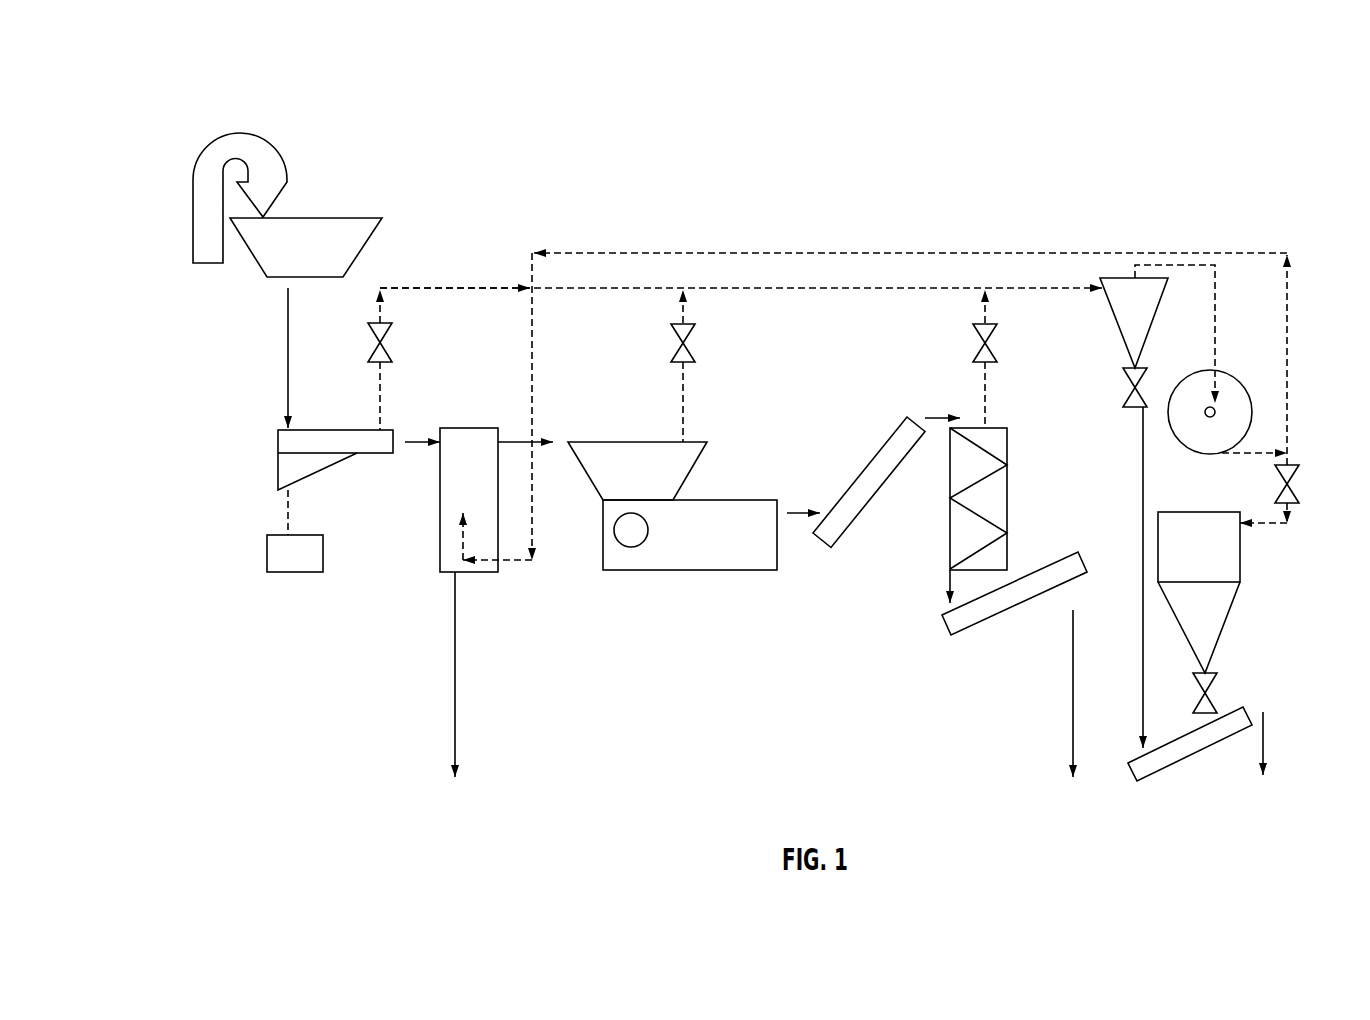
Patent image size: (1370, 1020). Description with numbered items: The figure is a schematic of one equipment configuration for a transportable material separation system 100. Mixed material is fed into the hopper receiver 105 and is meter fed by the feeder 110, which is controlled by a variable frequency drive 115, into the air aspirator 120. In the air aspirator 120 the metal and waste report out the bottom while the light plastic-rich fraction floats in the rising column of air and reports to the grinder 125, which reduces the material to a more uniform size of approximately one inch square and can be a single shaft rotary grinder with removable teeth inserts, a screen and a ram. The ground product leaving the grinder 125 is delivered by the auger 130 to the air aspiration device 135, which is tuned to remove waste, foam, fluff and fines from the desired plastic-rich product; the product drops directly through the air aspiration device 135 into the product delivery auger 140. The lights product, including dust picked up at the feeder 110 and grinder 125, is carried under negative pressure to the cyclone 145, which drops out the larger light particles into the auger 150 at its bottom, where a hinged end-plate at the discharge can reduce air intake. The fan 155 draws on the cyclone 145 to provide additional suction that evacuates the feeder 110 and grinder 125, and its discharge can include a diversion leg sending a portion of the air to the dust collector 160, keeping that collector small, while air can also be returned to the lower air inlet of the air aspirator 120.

The transportable material separation system 100 is at (190, 78).
The hopper receiver 105 is at (353, 243).
The feeder 110 is at (283, 443).
The variable frequency drive 115 is at (275, 555).
The air aspirator 120 is at (453, 478).
The grinder 125 is at (680, 454).
The auger 130 is at (880, 458).
The air aspiration device 135 is at (1000, 445).
The product delivery auger 140 is at (955, 618).
The cyclone 145 is at (1123, 302).
The auger 150 is at (1165, 757).
The fan 155 is at (1218, 440).
The dust collector 160 is at (1227, 550).